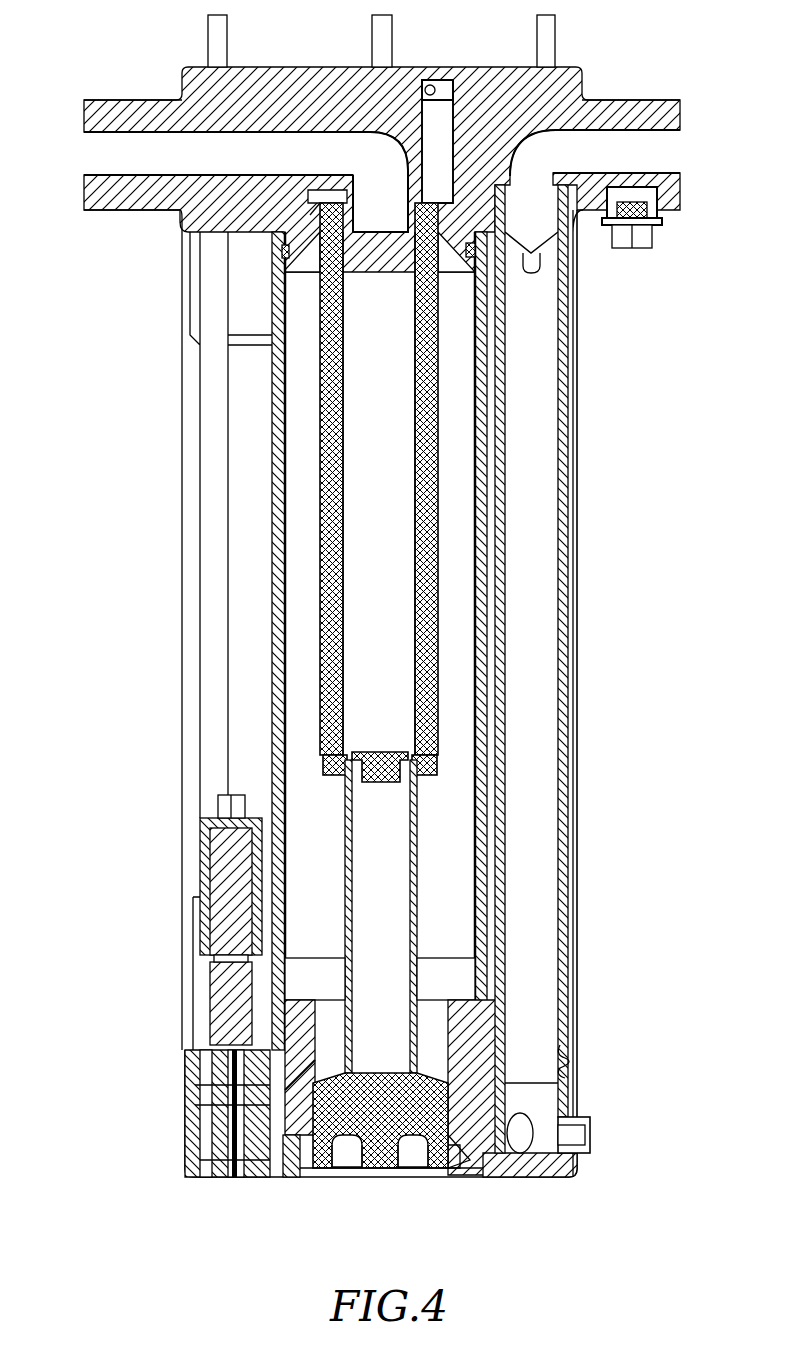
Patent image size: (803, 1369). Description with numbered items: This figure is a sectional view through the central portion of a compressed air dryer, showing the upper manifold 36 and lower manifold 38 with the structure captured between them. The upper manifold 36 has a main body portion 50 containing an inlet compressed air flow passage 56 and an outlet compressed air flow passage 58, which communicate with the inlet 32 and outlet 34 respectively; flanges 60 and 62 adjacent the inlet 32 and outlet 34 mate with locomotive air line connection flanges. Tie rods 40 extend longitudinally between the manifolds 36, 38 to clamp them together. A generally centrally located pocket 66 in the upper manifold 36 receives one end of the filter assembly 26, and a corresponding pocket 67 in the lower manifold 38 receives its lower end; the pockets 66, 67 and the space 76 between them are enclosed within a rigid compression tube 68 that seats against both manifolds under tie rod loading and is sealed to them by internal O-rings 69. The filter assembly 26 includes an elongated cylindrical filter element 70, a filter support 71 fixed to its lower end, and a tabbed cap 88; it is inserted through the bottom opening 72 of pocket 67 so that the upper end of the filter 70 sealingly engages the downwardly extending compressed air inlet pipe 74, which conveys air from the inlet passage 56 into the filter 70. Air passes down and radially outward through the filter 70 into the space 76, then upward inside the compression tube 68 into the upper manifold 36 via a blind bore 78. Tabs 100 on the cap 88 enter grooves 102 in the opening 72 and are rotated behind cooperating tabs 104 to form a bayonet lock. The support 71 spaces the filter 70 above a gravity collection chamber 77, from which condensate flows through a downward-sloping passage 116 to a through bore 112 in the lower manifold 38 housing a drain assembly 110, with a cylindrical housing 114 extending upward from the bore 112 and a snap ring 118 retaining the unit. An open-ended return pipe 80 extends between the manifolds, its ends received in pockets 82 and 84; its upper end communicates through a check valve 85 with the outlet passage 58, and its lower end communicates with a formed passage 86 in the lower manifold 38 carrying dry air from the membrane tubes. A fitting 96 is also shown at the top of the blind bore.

The filter assembly 26 is at (440, 762).
The inlet 32 is at (84, 165).
The outlet 34 is at (683, 166).
The upper manifold 36 is at (310, 66).
The lower manifold 38 is at (560, 1178).
The tie rods 40 is at (208, 32).
The main body portion 50 is at (175, 229).
The inlet compressed air flow passage 56 is at (90, 150).
The outlet compressed air flow passage 58 is at (665, 146).
The flange 60 is at (130, 100).
The flange 62 is at (640, 100).
The pocket 66 is at (343, 248).
The pocket 67 is at (414, 1168).
The compression tube 68 is at (280, 393).
The internal O-rings 69 is at (283, 252).
The filter element 70 is at (419, 501).
The filter support 71 is at (418, 848).
The bottom opening 72 is at (339, 1168).
The compressed air inlet pipe 74 is at (355, 196).
The space 76 is at (300, 516).
The gravity collection chamber 77 is at (318, 946).
The blind bore 78 is at (441, 100).
The return pipe 80 is at (570, 506).
The pocket 82 is at (568, 226).
The pocket 84 is at (568, 1052).
The check valve 85 is at (558, 270).
The formed passage 86 is at (526, 1128).
The tabbed cap 88 is at (380, 1168).
The fitting 96 is at (431, 84).
The tabs 100 is at (452, 1170).
The grooves 102 is at (292, 1178).
The tabs 104 is at (468, 1172).
The drain assembly 110 is at (210, 1014).
The through bore 112 is at (192, 1113).
The cylindrical housing 114 is at (205, 907).
The passage 116 is at (320, 1066).
The snap ring 118 is at (212, 1180).